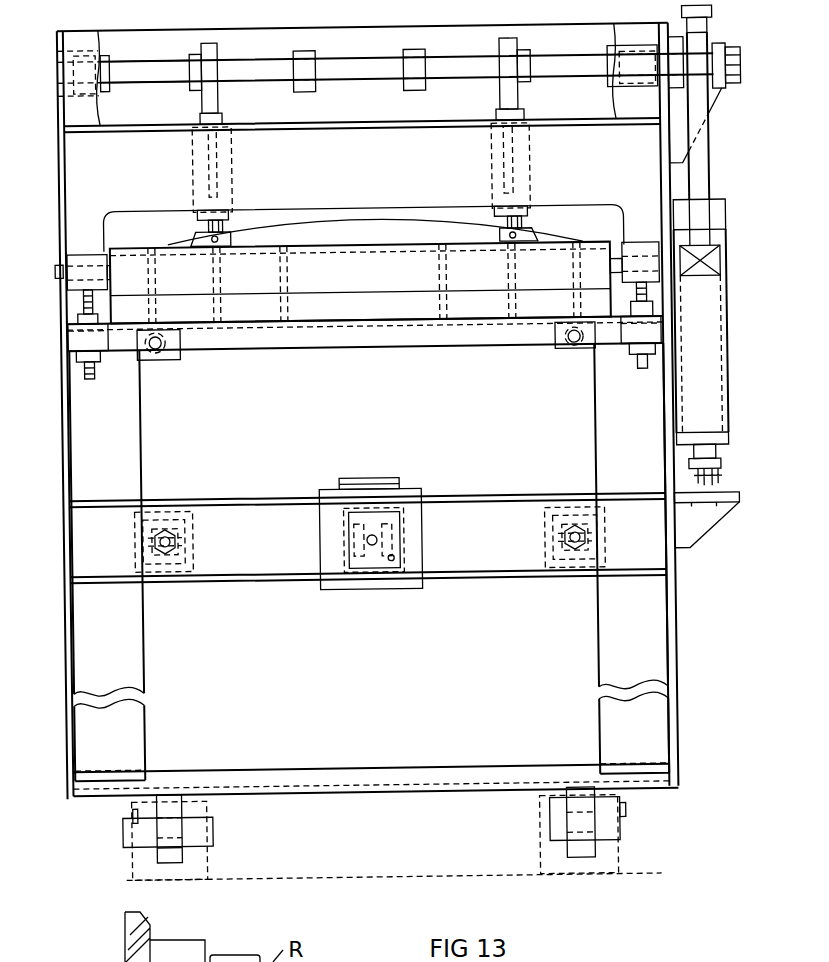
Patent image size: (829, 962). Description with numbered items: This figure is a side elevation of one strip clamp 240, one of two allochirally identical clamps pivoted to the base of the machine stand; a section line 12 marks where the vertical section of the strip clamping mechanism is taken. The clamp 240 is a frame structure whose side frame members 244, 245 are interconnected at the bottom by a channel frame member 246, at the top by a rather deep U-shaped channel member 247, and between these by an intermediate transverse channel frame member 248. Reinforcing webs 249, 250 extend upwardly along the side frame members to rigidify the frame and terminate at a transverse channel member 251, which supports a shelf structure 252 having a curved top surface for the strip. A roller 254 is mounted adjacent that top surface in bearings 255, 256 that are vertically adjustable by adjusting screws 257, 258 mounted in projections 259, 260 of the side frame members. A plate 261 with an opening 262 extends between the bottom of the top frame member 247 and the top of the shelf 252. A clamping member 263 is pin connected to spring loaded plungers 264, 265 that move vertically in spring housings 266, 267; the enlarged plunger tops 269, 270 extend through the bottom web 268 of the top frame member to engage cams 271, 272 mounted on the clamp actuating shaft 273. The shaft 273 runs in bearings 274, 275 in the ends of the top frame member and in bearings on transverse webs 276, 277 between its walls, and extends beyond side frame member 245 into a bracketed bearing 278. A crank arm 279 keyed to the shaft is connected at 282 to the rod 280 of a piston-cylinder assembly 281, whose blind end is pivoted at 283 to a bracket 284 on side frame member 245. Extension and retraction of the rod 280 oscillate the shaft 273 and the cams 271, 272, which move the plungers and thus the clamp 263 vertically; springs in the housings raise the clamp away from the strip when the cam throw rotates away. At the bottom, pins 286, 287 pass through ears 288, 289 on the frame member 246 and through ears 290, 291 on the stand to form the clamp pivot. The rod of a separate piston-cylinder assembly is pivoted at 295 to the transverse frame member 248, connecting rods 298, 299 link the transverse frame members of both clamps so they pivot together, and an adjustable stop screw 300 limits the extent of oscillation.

The section line 12 is at (469, 15).
The strip clamp 240 is at (700, 608).
The side frame member 244 is at (68, 490).
The side frame member 245 is at (673, 653).
The channel frame member 246 is at (355, 768).
The channel member 247 is at (365, 57).
The transverse channel frame member 248 is at (270, 580).
The reinforcing web 249 is at (142, 643).
The reinforcing web 250 is at (595, 642).
The transverse channel member 251 is at (337, 347).
The shelf structure 252 is at (397, 322).
The roller 254 is at (396, 291).
The bearing 255 is at (92, 255).
The bearing 256 is at (645, 262).
The adjusting screw 257 is at (92, 375).
The adjusting screw 258 is at (642, 373).
The projection 259 is at (72, 337).
The projection 260 is at (664, 334).
The plate 261 is at (66, 171).
The opening 262 is at (337, 209).
The clamping member 263 is at (412, 222).
The spring loaded plunger 264 is at (238, 233).
The spring loaded plunger 265 is at (540, 232).
The spring housing 266 is at (238, 165).
The spring housing 267 is at (536, 162).
The bottom web 268 is at (348, 122).
The plunger top 269 is at (227, 121).
The plunger top 270 is at (524, 121).
The cam 271 is at (223, 48).
The cam 272 is at (523, 42).
The clamp actuating shaft 273 is at (158, 58).
The bearing 274 is at (104, 40).
The bearing 275 is at (611, 48).
The transverse web 276 is at (302, 50).
The transverse web 277 is at (428, 50).
The bracketed bearing 278 is at (745, 58).
The crank arm 279 is at (716, 30).
The piston rod 280 is at (704, 152).
The piston-cylinder assembly 281 is at (729, 333).
The rod connection 282 is at (678, 40).
The pivot 283 is at (724, 472).
The bracket 284 is at (738, 503).
The pin 286 is at (208, 832).
The pin 287 is at (616, 835).
The ear 288 is at (166, 862).
The ear 289 is at (578, 862).
The ear 290 is at (205, 866).
The ear 291 is at (614, 867).
The pivot 295 is at (376, 540).
The connecting rod 298 is at (186, 536).
The connecting rod 299 is at (604, 538).
The adjustable stop screw 300 is at (562, 348).